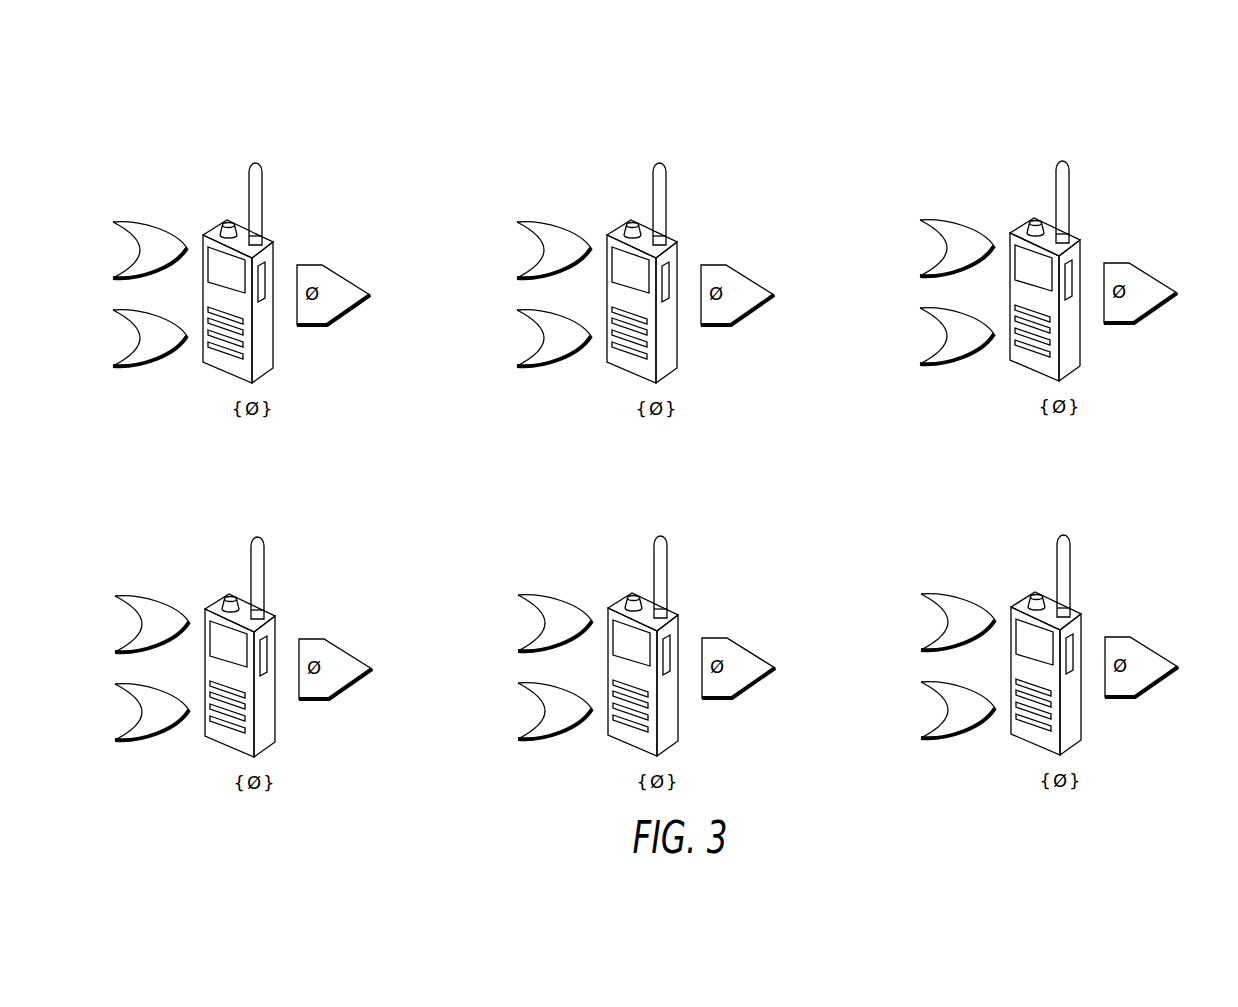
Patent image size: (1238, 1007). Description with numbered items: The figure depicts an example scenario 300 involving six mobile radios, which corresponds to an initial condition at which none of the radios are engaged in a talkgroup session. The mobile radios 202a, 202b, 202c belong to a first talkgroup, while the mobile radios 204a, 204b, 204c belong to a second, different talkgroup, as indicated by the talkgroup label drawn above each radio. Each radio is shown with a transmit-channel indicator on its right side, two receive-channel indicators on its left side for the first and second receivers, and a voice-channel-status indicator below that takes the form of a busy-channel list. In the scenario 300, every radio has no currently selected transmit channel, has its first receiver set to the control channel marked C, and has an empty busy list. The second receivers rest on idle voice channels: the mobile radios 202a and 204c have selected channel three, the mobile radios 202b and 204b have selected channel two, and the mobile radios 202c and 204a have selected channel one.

The example scenario 300 is at (118, 59).
The mobile radio 202a is at (307, 155).
The mobile radio 204b is at (659, 259).
The mobile radio 202c is at (1062, 257).
The mobile radio 204a is at (257, 633).
The mobile radio 202b is at (660, 632).
The mobile radio 204c is at (1063, 631).